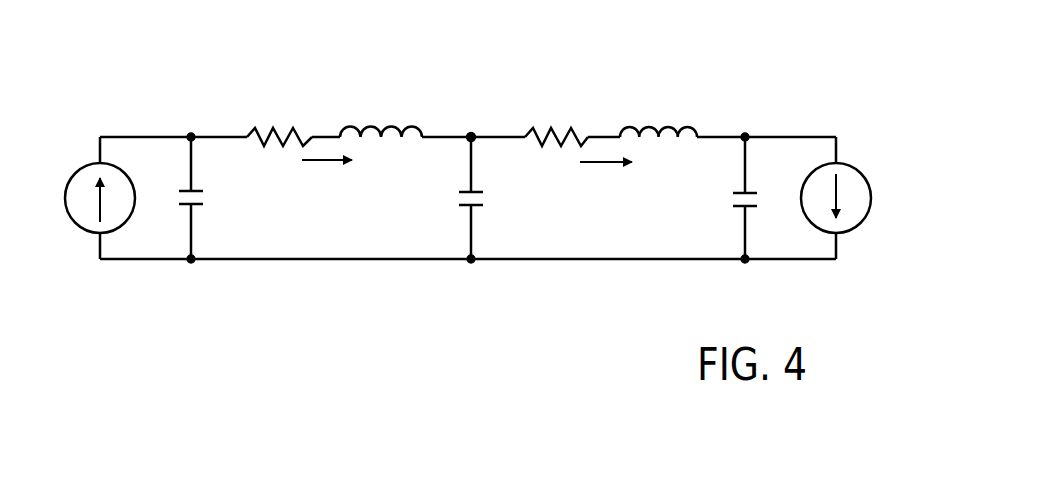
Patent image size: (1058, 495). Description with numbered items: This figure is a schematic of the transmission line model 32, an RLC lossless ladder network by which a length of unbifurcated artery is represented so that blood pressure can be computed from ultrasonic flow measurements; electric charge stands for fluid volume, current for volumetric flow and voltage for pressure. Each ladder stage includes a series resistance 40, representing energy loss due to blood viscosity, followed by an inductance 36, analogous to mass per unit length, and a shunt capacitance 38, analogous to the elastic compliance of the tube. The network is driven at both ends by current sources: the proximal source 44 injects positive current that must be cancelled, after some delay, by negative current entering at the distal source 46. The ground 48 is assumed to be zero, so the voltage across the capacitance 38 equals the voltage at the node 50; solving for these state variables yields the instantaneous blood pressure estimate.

The transmission line model 32 is at (573, 64).
The inductance 36 is at (407, 128).
The series resistance 40 is at (308, 135).
The capacitance 38 is at (200, 204).
The node 50 is at (476, 140).
The proximal current source 44 is at (73, 222).
The distal current source 46 is at (858, 222).
The ground 48 is at (607, 260).